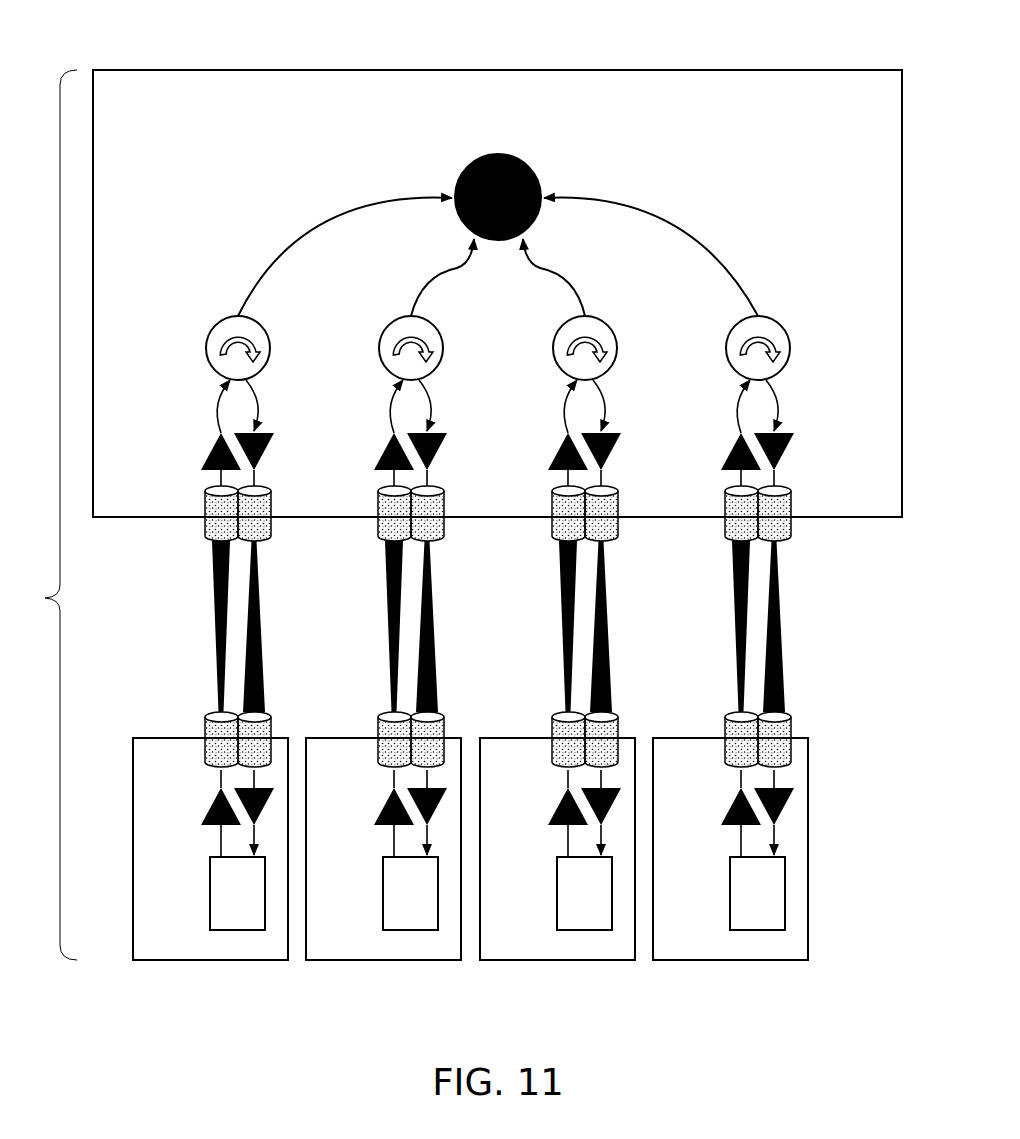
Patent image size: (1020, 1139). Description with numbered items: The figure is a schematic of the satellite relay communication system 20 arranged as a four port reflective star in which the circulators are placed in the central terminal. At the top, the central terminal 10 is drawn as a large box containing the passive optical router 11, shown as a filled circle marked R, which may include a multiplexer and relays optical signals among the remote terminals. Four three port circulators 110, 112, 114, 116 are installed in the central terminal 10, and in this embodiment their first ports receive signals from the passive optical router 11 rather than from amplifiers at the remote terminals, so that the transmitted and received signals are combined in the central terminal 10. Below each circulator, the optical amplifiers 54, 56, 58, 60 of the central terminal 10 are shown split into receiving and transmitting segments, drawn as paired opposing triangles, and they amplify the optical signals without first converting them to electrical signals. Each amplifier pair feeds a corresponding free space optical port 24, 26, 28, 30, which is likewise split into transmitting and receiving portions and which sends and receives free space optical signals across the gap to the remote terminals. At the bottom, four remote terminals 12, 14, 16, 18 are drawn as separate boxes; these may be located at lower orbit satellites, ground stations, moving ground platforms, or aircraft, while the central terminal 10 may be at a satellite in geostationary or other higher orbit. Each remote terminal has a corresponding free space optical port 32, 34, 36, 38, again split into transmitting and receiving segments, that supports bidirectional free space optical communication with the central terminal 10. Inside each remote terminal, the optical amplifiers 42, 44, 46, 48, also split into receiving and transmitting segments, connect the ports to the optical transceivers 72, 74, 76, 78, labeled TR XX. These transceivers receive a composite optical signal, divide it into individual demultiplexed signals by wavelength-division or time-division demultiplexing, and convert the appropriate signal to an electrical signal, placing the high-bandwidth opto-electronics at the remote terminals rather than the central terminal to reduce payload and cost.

The central terminal 10 is at (681, 70).
The passive optical router 11 is at (502, 155).
The satellite relay communication system 20 is at (44, 597).
The three port circulator 110 is at (215, 328).
The three port circulator 112 is at (389, 326).
The three port circulator 114 is at (560, 338).
The three port circulator 116 is at (727, 345).
The optical amplifier 54 is at (204, 447).
The optical amplifier 56 is at (377, 447).
The optical amplifier 58 is at (551, 447).
The optical amplifier 60 is at (724, 447).
The free space optical port 24 is at (278, 531).
The free space optical port 26 is at (451, 531).
The free space optical port 28 is at (625, 531).
The free space optical port 30 is at (798, 531).
The free space optical port 32 is at (279, 712).
The free space optical port 34 is at (452, 712).
The free space optical port 36 is at (626, 712).
The free space optical port 38 is at (799, 712).
The optical amplifier 42 is at (205, 805).
The optical amplifier 44 is at (378, 805).
The optical amplifier 46 is at (552, 805).
The optical amplifier 48 is at (725, 805).
The remote terminal 12 is at (175, 962).
The remote terminal 14 is at (383, 962).
The remote terminal 16 is at (555, 962).
The remote terminal 18 is at (728, 962).
The optical transceiver 72 is at (254, 938).
The optical transceiver 74 is at (427, 938).
The optical transceiver 76 is at (601, 938).
The optical transceiver 78 is at (774, 938).